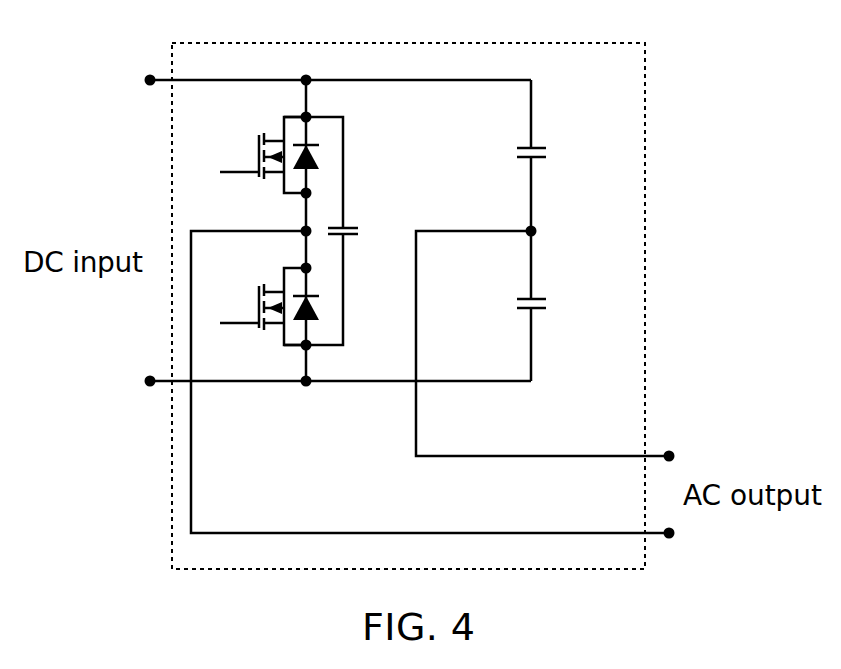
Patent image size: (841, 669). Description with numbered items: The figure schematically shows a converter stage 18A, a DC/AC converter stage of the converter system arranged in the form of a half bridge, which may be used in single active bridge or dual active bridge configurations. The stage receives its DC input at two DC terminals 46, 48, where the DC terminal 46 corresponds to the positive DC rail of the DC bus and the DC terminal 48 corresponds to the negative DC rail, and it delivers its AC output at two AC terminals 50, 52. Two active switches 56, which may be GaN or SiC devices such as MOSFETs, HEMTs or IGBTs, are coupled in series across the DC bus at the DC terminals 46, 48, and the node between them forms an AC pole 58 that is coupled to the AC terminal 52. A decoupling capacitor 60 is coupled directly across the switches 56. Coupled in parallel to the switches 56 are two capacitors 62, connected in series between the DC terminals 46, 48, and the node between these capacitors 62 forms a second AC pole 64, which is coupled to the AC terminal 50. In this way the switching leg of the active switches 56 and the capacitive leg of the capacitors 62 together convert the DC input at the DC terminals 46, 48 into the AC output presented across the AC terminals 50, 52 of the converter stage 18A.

The converter stage 18A is at (645, 63).
The DC terminal 46 is at (150, 80).
The DC terminal 48 is at (150, 381).
The AC terminal 50 is at (669, 456).
The AC terminal 52 is at (669, 533).
The active switches 56 is at (247, 157).
The AC pole 58 is at (305, 230).
The decoupling capacitor 60 is at (345, 227).
The capacitors 62 is at (546, 148).
The AC pole 64 is at (532, 229).